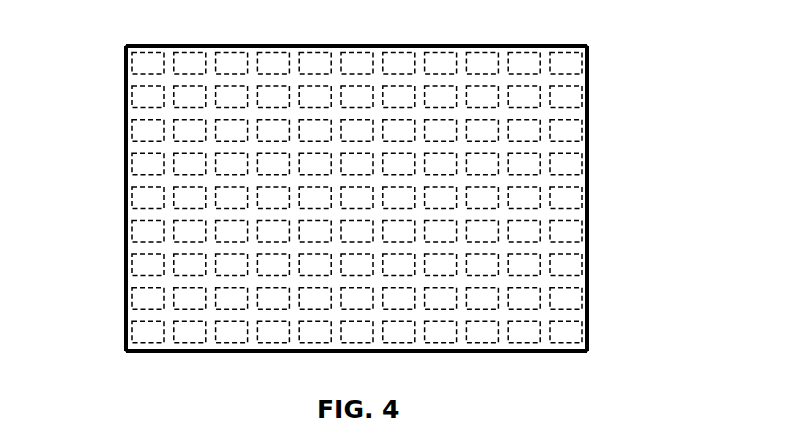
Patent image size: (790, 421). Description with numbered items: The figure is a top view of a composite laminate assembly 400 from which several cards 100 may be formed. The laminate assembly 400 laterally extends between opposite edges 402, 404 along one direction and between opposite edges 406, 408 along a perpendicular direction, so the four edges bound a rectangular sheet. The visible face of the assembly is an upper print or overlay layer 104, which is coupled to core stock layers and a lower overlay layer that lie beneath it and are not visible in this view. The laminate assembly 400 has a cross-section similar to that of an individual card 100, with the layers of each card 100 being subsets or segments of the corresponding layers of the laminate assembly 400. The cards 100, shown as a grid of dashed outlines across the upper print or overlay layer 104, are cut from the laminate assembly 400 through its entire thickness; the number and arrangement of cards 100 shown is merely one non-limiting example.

The composite laminate assembly 400 is at (606, 58).
The edge 402 is at (121, 202).
The edge 404 is at (591, 185).
The edge 406 is at (336, 42).
The edge 408 is at (272, 355).
The upper print or overlay layer 104 is at (583, 80).
The card 100 is at (570, 162).